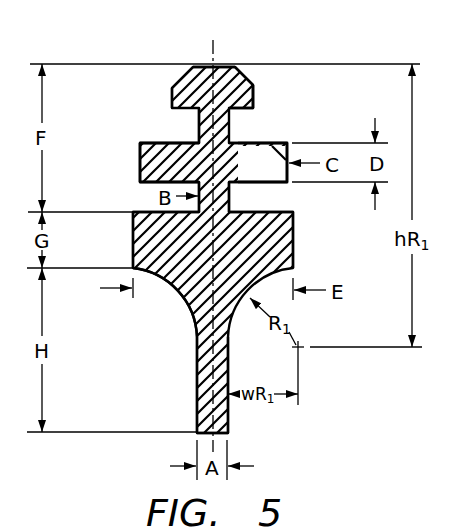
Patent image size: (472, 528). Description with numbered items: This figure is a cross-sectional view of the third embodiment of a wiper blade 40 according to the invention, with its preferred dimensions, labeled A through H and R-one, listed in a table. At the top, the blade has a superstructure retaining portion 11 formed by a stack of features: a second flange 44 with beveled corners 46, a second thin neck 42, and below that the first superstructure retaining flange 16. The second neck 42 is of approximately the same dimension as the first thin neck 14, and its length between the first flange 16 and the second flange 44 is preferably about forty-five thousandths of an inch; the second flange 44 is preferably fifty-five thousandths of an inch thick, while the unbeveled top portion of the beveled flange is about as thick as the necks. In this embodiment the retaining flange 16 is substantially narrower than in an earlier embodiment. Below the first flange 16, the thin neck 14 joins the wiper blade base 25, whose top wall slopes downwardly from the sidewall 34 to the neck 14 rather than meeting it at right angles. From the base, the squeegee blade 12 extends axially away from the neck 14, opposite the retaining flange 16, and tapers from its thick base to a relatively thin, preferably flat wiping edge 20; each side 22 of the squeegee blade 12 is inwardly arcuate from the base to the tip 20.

The wiper blade 40 is at (317, 49).
The beveled corners 46 is at (247, 64).
The second flange 44 is at (254, 99).
The second thin neck 42 is at (230, 142).
The superstructure retaining flange 16 is at (266, 173).
The thin neck 14 is at (230, 197).
The superstructure retaining portion 11 is at (141, 132).
The sidewall 34 is at (132, 228).
The wiper blade base 25 is at (294, 244).
The squeegee blade 12 is at (158, 284).
The side of the squeegee blade 22 is at (197, 327).
The wiping edge 20 is at (218, 434).